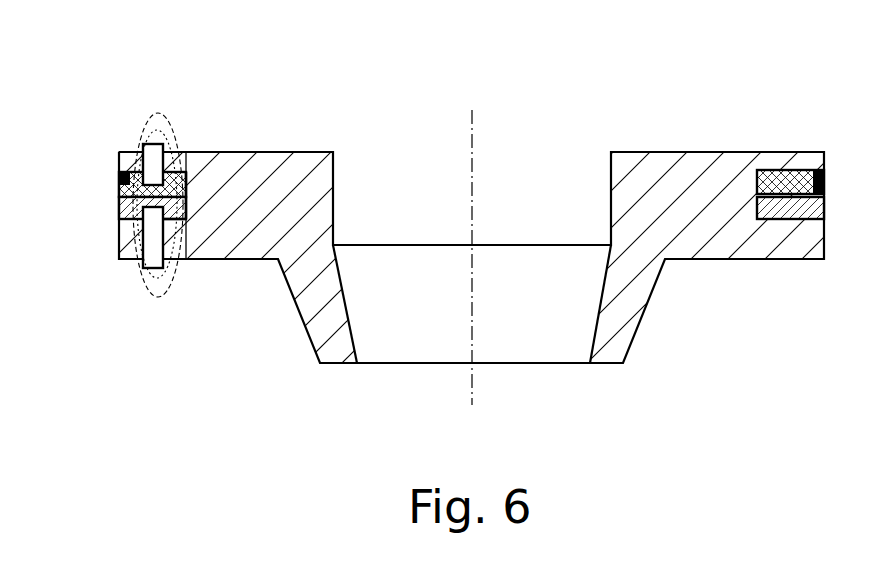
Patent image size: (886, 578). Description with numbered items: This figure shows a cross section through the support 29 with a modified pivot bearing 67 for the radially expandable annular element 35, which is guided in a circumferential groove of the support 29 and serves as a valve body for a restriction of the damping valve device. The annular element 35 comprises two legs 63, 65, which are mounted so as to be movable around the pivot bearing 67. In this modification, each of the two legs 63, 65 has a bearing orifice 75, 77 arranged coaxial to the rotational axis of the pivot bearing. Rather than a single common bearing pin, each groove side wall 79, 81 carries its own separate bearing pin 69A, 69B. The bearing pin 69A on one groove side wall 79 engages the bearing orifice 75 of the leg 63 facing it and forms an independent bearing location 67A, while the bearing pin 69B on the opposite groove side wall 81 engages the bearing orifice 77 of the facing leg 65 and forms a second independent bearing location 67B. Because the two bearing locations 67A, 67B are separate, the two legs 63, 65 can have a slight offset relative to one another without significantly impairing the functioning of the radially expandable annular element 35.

The support 29 is at (645, 185).
The annular element 35 is at (112, 198).
The leg 63 is at (186, 218).
The leg 65 is at (186, 200).
The pivot bearing 67 is at (137, 148).
The bearing location 67A is at (168, 140).
The bearing location 67B is at (157, 297).
The bearing pin 69A is at (152, 165).
The bearing pin 69B is at (153, 244).
The bearing orifice 75 is at (150, 170).
The bearing orifice 77 is at (135, 228).
The groove side wall 79 is at (790, 178).
The groove side wall 81 is at (784, 200).